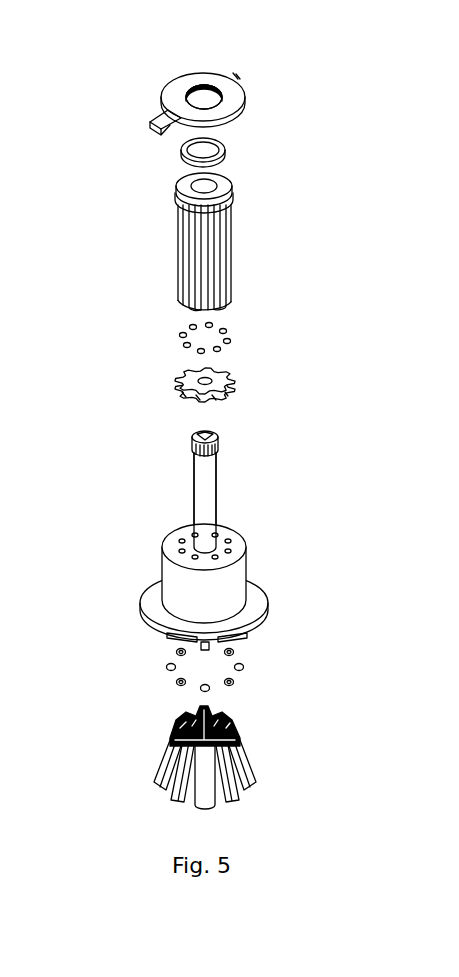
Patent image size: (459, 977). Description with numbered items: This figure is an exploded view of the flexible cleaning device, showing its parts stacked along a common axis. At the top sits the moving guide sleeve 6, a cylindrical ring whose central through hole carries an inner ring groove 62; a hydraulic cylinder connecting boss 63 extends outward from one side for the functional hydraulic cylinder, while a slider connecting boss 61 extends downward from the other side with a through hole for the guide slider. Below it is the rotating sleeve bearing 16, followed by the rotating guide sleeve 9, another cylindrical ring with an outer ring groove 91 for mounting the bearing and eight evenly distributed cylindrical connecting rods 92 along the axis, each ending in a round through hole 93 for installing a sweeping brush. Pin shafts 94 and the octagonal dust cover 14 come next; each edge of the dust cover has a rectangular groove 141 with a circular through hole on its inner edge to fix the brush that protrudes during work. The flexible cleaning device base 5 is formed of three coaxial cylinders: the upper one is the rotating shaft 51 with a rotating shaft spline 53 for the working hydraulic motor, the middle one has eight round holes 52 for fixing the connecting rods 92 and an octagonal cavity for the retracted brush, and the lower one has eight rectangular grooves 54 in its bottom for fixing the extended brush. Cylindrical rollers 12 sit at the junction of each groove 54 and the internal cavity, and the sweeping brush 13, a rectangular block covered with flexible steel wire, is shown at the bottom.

The flexible cleaning device base 5 is at (224, 580).
The moving guide sleeve 6 is at (242, 98).
The rotating guide sleeve 9 is at (232, 190).
The cylindrical roller 12 is at (168, 662).
The sweeping brush 13 is at (242, 745).
The dust cover 14 is at (188, 370).
The rotating sleeve bearing 16 is at (226, 152).
The rotating shaft 51 is at (205, 503).
The round hole 52 is at (185, 545).
The rotating shaft spline 53 is at (220, 448).
The rectangular groove 54 is at (250, 630).
The slider connecting boss 61 is at (237, 77).
The ring groove 62 is at (190, 92).
The hydraulic cylinder connecting boss 63 is at (165, 118).
The ring groove 91 is at (232, 208).
The cylindrical connecting rod 92 is at (190, 250).
The round through hole 93 is at (231, 302).
The pin shaft 94 is at (228, 342).
The rectangular groove 141 is at (226, 396).